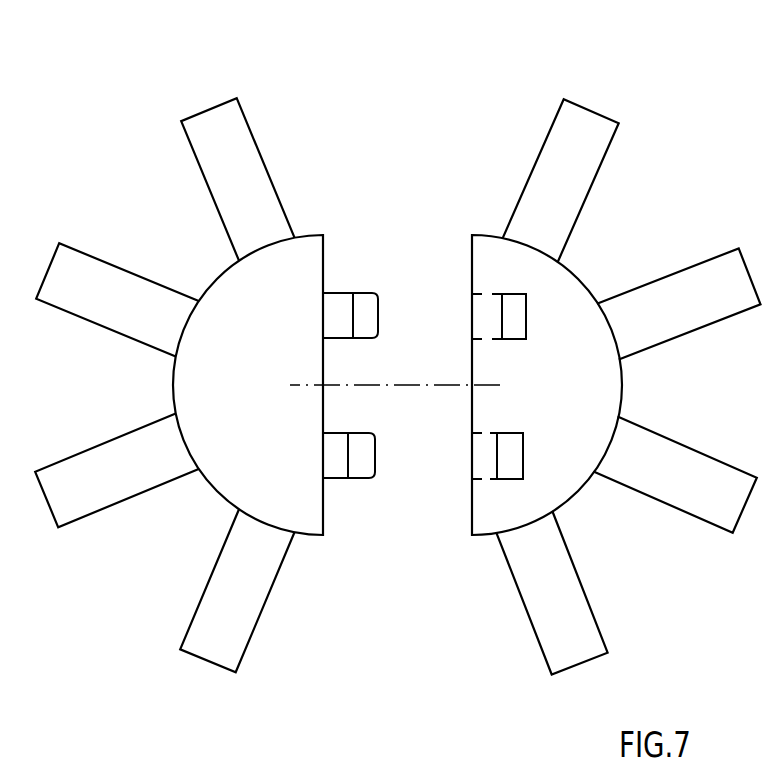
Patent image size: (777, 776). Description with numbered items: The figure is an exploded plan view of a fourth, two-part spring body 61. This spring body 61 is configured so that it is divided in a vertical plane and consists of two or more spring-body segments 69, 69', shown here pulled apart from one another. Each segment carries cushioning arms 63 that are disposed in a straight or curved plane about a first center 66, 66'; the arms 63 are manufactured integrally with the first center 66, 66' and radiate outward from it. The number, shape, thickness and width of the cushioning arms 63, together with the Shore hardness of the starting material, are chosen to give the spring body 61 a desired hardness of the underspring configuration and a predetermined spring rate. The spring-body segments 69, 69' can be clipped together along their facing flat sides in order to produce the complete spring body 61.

The spring body 61 is at (395, 112).
The cushioning arms 63 is at (163, 308).
The first center 66 is at (248, 268).
The first center 66' is at (616, 338).
The spring-body segment 69 is at (334, 240).
The spring-body segment 69' is at (499, 240).